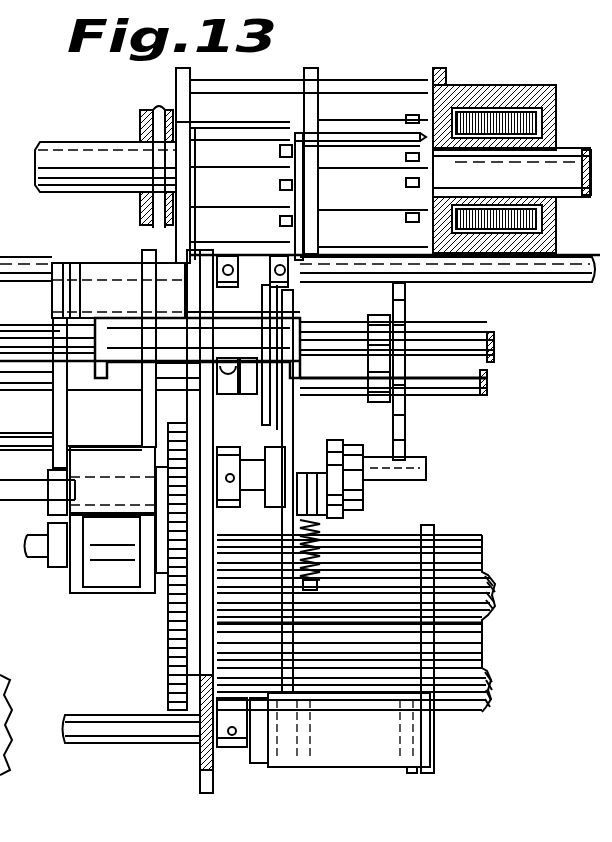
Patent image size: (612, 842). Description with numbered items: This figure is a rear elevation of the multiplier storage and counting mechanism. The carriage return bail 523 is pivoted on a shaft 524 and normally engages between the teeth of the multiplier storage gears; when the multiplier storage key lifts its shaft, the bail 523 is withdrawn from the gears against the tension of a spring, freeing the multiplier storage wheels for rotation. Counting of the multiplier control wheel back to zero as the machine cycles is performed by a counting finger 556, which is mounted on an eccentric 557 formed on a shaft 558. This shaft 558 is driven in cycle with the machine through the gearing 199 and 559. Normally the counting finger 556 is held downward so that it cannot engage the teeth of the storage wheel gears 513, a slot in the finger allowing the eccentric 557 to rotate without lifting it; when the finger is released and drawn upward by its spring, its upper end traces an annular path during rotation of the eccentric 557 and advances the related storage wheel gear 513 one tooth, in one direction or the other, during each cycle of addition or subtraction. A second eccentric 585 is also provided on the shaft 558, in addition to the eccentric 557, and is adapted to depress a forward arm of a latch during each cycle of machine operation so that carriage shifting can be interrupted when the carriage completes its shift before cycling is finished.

The carriage return bail 523 is at (372, 136).
The storage wheel gears 513 is at (520, 88).
The shaft 524 is at (565, 285).
The counting finger 556 is at (290, 415).
The eccentric 585 is at (430, 466).
The eccentric 557 is at (322, 518).
The shaft 558 is at (260, 497).
The gearing 559 is at (230, 585).
The gearing 199 is at (482, 555).